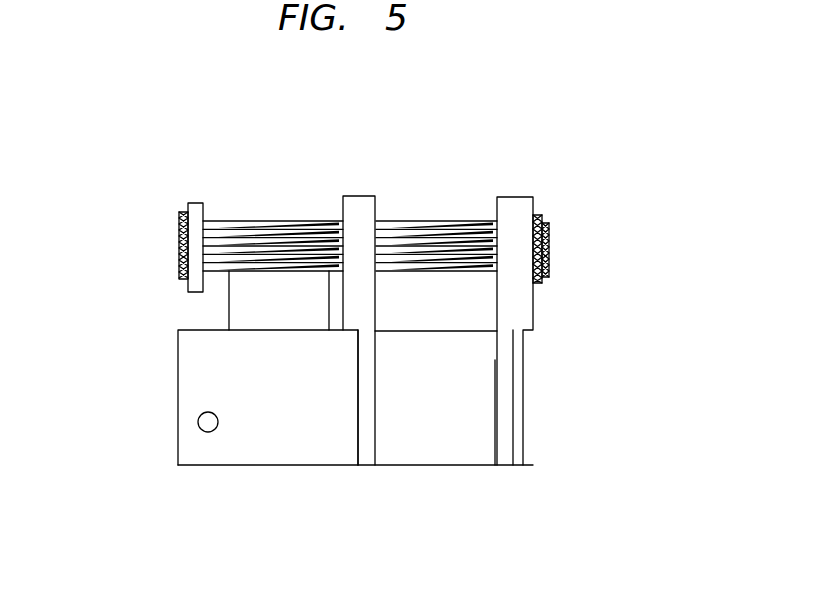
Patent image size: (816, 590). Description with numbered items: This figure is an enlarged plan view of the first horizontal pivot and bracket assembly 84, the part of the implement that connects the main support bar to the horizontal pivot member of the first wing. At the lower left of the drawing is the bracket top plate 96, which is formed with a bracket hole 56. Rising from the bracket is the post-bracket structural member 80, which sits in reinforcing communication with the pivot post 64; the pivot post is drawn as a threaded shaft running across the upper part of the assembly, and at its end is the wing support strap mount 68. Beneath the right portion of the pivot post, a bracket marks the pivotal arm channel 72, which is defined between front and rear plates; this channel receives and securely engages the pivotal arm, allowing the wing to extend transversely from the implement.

The bracket hole 56 is at (198, 422).
The pivot post 64 is at (442, 222).
The wing support strap mount 68 is at (197, 203).
The pivotal arm channel 72 is at (370, 483).
The post-bracket structural member 80 is at (228, 310).
The first horizontal pivot and bracket assembly 84 is at (602, 391).
The bracket top plate 96 is at (288, 449).